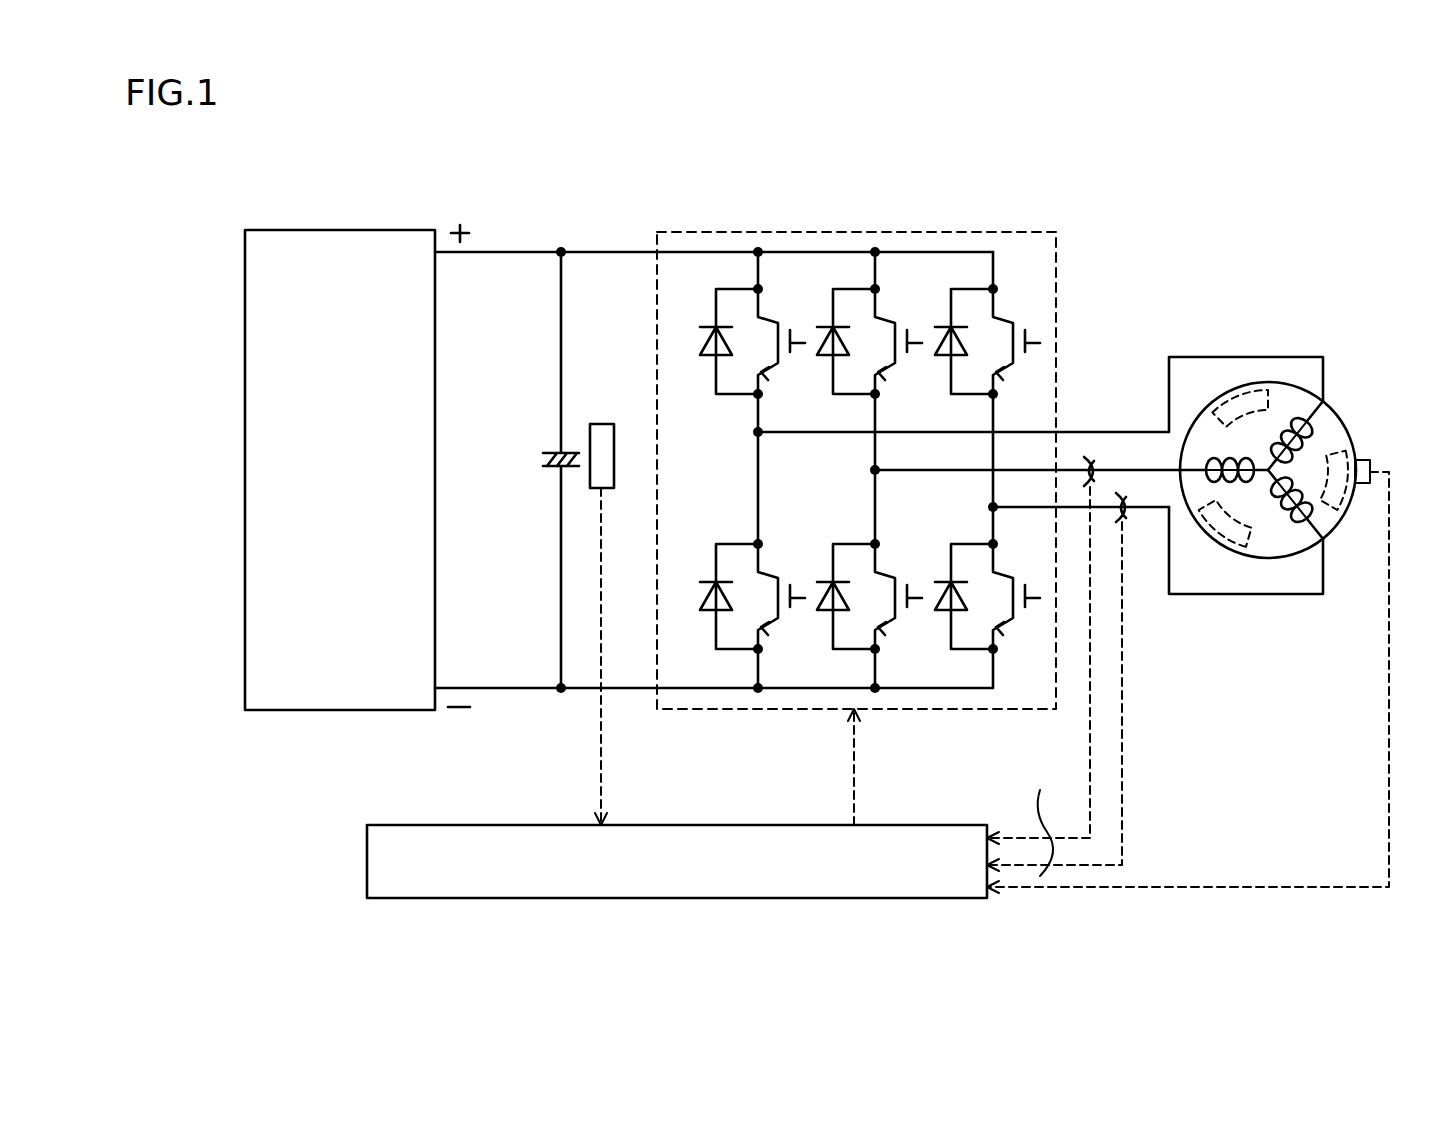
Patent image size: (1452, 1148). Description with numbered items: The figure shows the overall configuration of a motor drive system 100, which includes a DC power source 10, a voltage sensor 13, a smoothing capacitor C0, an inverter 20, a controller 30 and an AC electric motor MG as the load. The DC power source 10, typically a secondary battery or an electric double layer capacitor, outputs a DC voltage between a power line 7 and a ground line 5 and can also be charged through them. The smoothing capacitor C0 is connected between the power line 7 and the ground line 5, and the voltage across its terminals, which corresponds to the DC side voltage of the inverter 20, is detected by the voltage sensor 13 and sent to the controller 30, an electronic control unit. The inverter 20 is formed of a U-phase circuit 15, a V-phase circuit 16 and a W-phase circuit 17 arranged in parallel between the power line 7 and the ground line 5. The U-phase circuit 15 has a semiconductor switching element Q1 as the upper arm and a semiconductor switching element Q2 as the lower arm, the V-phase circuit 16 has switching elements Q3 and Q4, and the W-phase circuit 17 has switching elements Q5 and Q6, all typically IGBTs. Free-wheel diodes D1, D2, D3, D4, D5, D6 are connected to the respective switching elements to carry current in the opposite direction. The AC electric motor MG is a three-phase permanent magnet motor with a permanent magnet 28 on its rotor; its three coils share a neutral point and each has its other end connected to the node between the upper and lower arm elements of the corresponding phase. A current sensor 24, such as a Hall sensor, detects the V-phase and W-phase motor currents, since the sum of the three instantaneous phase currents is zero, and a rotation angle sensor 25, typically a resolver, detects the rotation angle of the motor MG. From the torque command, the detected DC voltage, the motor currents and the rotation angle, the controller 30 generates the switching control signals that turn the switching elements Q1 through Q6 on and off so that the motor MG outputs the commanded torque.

The motor drive system 100 is at (642, 143).
The DC power source 10 is at (345, 230).
The power line 7 is at (601, 250).
The ground line 5 is at (528, 697).
The smoothing capacitor C0 is at (560, 452).
The voltage sensor 13 is at (602, 424).
The inverter 20 is at (848, 232).
The semiconductor switching element Q1 is at (782, 339).
The semiconductor switching element Q2 is at (782, 594).
The semiconductor switching element Q3 is at (899, 339).
The semiconductor switching element Q4 is at (899, 594).
The semiconductor switching element Q5 is at (1017, 339).
The semiconductor switching element Q6 is at (1017, 594).
The free-wheel diode D1 is at (717, 341).
The free-wheel diode D2 is at (717, 596).
The free-wheel diode D3 is at (834, 344).
The free-wheel diode D4 is at (834, 600).
The free-wheel diode D5 is at (951, 346).
The free-wheel diode D6 is at (951, 599).
The U-phase circuit 15 is at (741, 443).
The V-phase circuit 16 is at (859, 476).
The W-phase circuit 17 is at (977, 511).
The current sensor 24 is at (1093, 456).
The AC electric motor MG is at (1346, 424).
The permanent magnet 28 is at (1249, 387).
The rotation angle sensor 25 is at (1370, 459).
The controller 30 is at (750, 825).